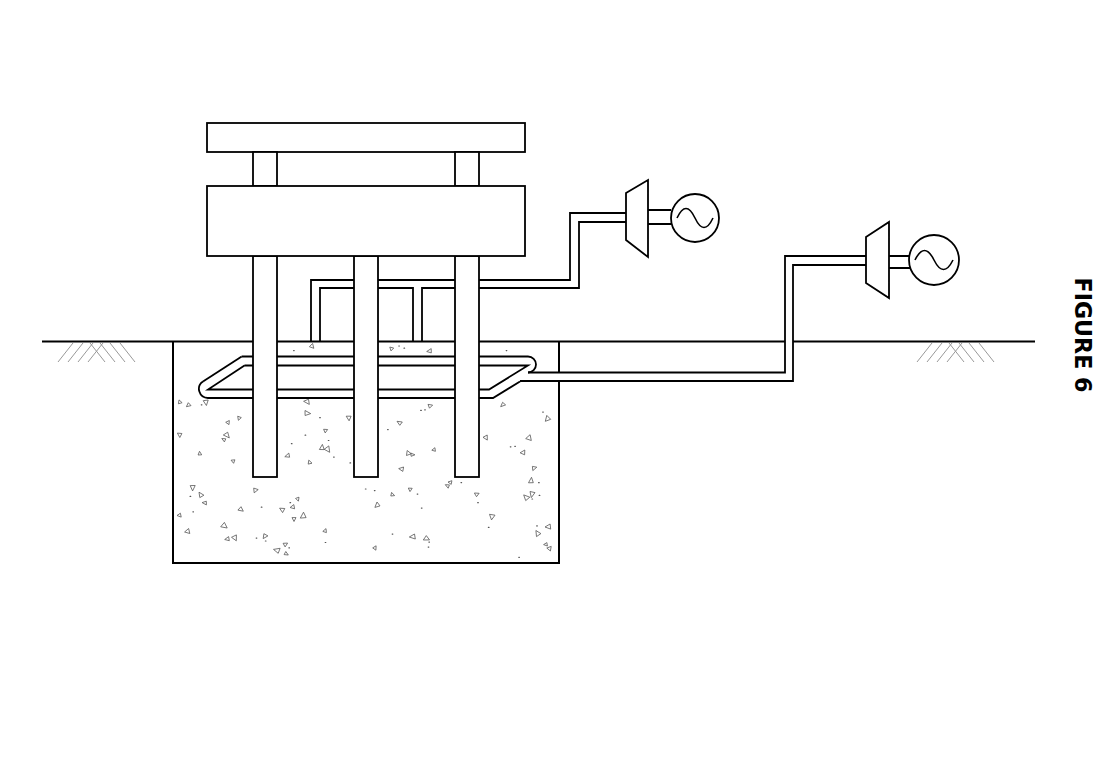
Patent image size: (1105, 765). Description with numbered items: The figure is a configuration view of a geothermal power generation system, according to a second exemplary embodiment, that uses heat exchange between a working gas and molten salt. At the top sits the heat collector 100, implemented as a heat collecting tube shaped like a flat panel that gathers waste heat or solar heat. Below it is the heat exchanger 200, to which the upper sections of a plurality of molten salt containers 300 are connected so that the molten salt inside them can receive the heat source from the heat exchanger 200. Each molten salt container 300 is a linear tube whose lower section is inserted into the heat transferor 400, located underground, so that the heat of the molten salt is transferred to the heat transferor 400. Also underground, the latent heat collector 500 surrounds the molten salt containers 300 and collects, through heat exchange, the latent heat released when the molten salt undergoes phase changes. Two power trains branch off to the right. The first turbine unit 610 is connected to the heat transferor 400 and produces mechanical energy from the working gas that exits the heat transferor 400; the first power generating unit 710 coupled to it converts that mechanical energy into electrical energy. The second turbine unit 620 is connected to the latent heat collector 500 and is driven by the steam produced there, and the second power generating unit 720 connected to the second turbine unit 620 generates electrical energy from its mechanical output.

The heat collector 100 is at (370, 130).
The heat exchanger 200 is at (212, 213).
The molten salt container 300 is at (262, 478).
The heat transferor 400 is at (178, 527).
The latent heat collector 500 is at (202, 398).
The first turbine unit 610 is at (636, 197).
The first power generating unit 710 is at (697, 197).
The second turbine unit 620 is at (876, 240).
The second power generating unit 720 is at (935, 238).